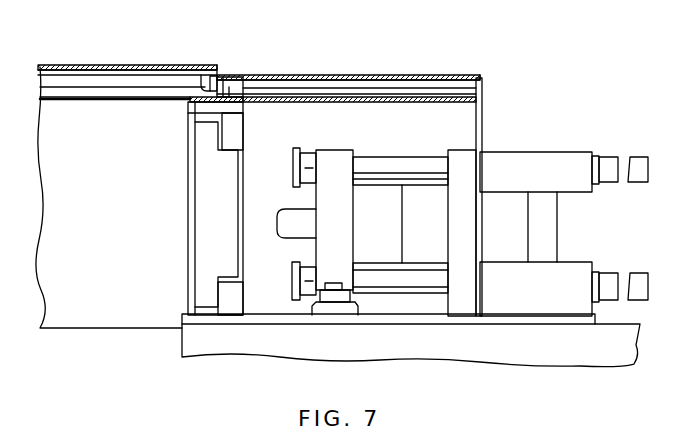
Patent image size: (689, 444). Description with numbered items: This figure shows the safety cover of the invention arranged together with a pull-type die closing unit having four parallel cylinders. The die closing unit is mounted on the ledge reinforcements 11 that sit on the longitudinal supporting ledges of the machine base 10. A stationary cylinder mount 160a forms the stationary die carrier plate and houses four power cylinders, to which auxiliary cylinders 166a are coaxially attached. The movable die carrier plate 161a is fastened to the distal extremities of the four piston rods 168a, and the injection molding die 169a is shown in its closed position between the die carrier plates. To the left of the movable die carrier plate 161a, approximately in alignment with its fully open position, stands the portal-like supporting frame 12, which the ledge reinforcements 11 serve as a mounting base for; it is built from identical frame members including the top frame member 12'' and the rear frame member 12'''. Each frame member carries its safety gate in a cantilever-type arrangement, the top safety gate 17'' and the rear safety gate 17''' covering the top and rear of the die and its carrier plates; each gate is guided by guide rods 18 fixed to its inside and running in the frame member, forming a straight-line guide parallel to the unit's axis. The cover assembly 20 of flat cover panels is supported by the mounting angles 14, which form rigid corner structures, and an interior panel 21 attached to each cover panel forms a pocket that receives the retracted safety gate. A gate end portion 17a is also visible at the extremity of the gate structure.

The machine base 10 is at (225, 330).
The ledge reinforcements 11 is at (283, 323).
The supporting frame 12 is at (189, 206).
The top frame member 12'' is at (243, 58).
The rear frame member 12''' is at (186, 208).
The mounting angles 14 is at (75, 95).
The rail end bracket 17a is at (201, 70).
The top safety gate 17'' is at (348, 53).
The rear safety gate 17''' is at (359, 122).
The guide rods 18 is at (370, 77).
The cover assembly 20 is at (89, 66).
The interior panel 21 is at (104, 298).
The stationary cylinder mount 160a is at (512, 167).
The movable die carrier plate 161a is at (330, 158).
The auxiliary cylinders 166a is at (606, 160).
The piston rods 168a is at (395, 161).
The injection molding die 169a is at (422, 258).